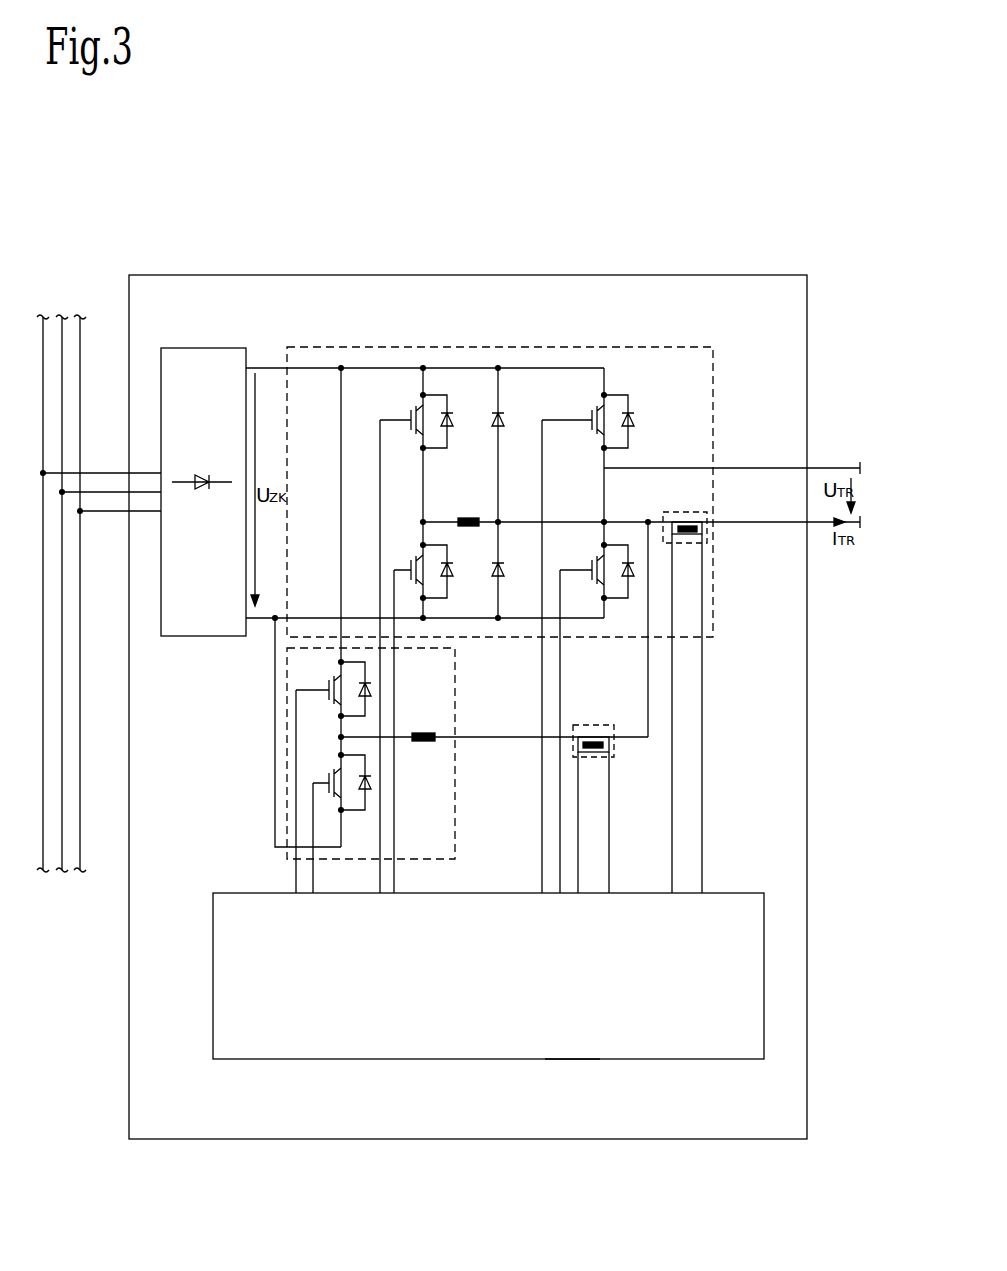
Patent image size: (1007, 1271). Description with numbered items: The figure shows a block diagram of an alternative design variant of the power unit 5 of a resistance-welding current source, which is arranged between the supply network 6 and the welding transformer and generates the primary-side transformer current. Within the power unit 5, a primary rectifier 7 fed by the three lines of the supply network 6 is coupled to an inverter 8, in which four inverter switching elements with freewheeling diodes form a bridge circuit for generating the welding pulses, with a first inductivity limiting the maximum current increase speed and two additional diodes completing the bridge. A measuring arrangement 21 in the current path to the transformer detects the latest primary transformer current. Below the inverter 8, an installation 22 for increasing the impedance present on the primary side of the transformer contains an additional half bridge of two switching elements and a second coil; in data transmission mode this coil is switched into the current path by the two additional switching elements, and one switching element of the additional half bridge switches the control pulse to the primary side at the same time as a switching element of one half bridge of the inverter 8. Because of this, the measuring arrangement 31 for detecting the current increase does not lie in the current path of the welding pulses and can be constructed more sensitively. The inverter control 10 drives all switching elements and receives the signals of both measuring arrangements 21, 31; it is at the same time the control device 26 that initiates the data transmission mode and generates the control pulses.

The power unit 5 is at (533, 275).
The supply network 6 is at (63, 291).
The primary rectifier 7 is at (232, 638).
The inverter 8 is at (318, 346).
The inverter control 10 is at (488, 976).
The measuring arrangement 21 is at (708, 538).
The installation for increasing the impedance 22 is at (287, 773).
The control device 26 is at (567, 1060).
The measuring arrangement 31 is at (615, 740).